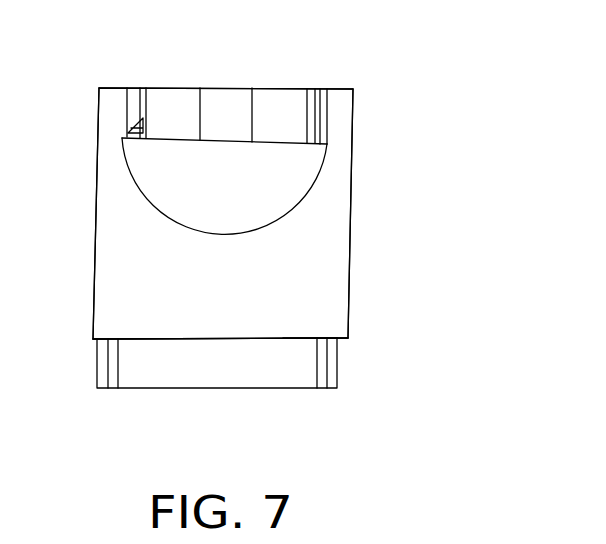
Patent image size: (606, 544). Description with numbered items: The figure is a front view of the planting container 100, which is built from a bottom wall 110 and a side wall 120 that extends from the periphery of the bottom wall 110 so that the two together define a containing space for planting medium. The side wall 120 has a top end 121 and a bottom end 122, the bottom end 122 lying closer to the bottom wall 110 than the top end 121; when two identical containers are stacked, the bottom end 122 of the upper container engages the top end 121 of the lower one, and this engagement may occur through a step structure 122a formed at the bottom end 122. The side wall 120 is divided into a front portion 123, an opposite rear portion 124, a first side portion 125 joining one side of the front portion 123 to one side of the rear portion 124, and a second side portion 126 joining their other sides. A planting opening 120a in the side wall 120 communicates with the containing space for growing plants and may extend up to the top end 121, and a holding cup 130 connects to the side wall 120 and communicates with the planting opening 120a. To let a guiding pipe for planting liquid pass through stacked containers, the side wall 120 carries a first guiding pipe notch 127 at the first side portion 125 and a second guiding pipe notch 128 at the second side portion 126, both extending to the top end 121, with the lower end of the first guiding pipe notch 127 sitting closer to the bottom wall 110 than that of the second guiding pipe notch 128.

The planting container 100 is at (475, 132).
The bottom wall 110 is at (202, 390).
The side wall 120 is at (363, 250).
The planting opening 120a is at (136, 117).
The top end 121 is at (178, 88).
The bottom end 122 is at (340, 370).
The step structure 122a is at (286, 344).
The front portion 123 is at (338, 306).
The rear portion 124 is at (220, 105).
The first side portion 125 is at (96, 213).
The second side portion 126 is at (352, 197).
The first guiding pipe notch 127 is at (131, 94).
The second guiding pipe notch 128 is at (321, 95).
The holding cup 130 is at (188, 216).